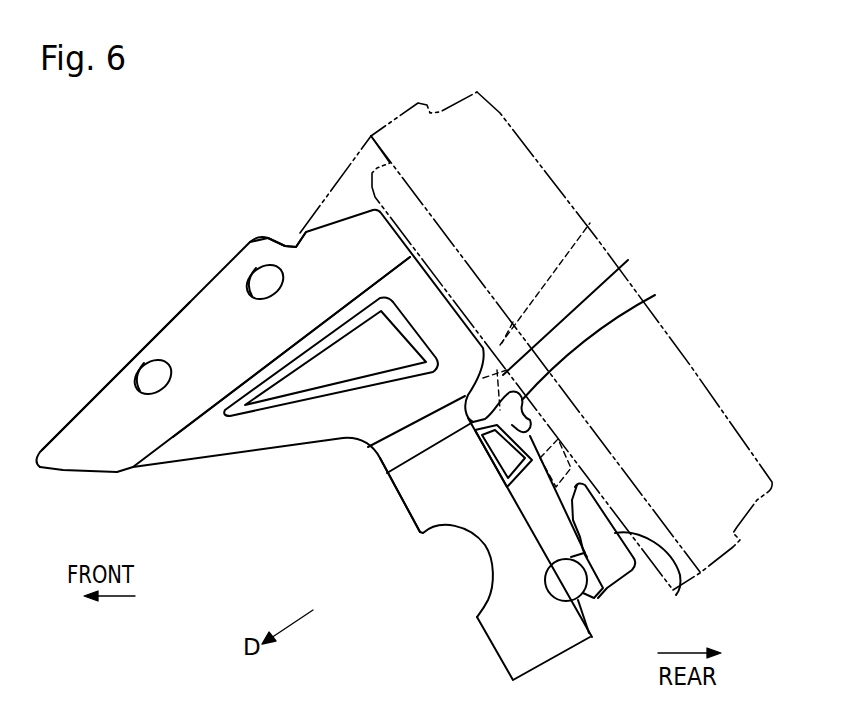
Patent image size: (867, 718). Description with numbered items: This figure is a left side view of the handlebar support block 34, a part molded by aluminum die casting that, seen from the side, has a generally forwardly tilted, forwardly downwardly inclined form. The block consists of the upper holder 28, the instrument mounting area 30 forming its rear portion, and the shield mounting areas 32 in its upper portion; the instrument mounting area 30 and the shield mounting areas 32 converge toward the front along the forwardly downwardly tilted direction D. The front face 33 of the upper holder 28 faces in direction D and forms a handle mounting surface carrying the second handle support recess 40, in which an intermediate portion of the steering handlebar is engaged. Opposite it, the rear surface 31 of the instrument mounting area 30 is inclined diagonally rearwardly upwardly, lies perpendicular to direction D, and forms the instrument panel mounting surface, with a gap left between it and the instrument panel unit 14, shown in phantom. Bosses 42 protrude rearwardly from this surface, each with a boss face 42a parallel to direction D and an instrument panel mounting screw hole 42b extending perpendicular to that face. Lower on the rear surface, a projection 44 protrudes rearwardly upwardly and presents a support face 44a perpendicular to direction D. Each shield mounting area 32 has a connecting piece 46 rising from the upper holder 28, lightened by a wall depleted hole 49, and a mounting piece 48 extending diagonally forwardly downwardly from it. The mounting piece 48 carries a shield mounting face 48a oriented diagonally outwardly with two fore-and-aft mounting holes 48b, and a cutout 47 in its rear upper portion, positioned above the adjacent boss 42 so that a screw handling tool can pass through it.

The instrument panel unit 14 is at (500, 113).
The upper holder 28 is at (500, 650).
The instrument mounting area 30 is at (555, 590).
The rear surface 31 is at (590, 603).
The shield mounting area 32 is at (183, 300).
The front face 33 is at (407, 512).
The handlebar support block 34 is at (257, 214).
The second handle support recess 40 is at (493, 575).
The boss 42 is at (650, 300).
The boss face 42a is at (622, 262).
The instrument panel mounting screw hole 42b is at (602, 212).
The projection 44 is at (622, 570).
The support face 44a is at (677, 588).
The connecting piece 46 is at (300, 433).
The cutout 47 is at (292, 247).
The mounting piece 48 is at (95, 387).
The shield mounting face 48a is at (160, 333).
The mounting hole 48b is at (253, 280).
The wall depleted hole 49 is at (340, 387).